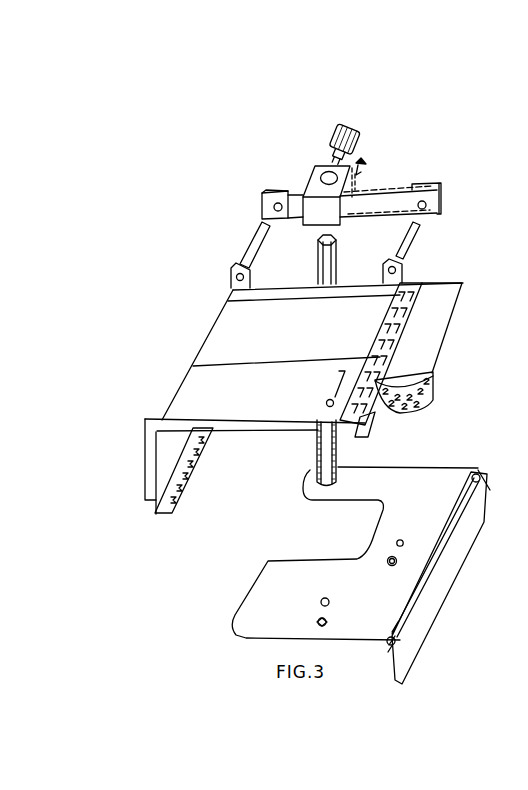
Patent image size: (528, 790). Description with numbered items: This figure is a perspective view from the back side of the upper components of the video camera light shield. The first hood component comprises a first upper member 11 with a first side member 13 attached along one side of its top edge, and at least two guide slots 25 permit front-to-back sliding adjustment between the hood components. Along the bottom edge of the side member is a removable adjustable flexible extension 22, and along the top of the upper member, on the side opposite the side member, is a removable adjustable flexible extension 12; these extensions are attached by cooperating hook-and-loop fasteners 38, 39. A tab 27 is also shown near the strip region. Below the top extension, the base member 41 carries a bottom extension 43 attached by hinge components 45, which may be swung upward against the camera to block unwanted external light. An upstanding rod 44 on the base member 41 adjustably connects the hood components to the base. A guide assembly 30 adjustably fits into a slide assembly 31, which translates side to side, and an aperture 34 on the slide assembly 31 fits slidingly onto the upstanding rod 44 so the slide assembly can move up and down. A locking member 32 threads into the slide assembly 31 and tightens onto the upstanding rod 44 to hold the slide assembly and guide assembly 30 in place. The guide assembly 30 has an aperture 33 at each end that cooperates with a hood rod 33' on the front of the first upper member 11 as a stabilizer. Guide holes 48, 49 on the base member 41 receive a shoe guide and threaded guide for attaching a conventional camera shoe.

The first upper member 11 is at (312, 342).
The removable adjustable flexible extension 12 is at (442, 290).
The first side member 13 is at (172, 452).
The removable adjustable flexible extension 22 is at (153, 512).
The guide slot 25 is at (326, 400).
The tab 27 is at (358, 433).
The guide assembly 30 is at (400, 190).
The slide assembly 31 is at (362, 162).
The locking member 32 is at (346, 126).
The aperture 33 is at (345, 183).
The hood rod 33' is at (333, 255).
The aperture 34 is at (323, 173).
The hook-and-loop fastener 38 is at (436, 382).
The hook-and-loop fastener 39 is at (370, 412).
The base member 41 is at (423, 512).
The bottom extension 43 is at (439, 578).
The upstanding rod 44 is at (314, 467).
The hinge component 45 is at (482, 492).
The guide hole 48 is at (318, 598).
The guide hole 49 is at (310, 622).